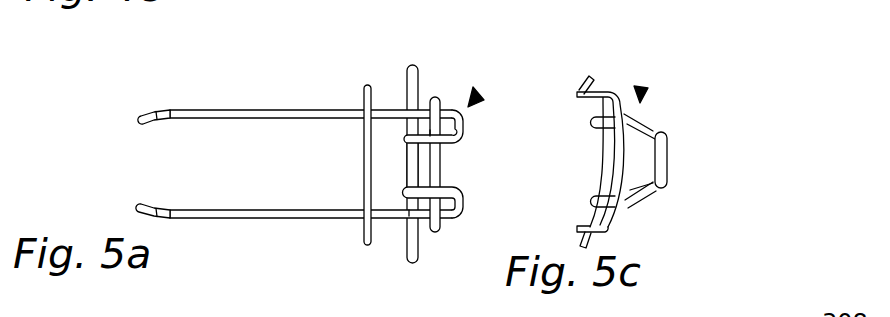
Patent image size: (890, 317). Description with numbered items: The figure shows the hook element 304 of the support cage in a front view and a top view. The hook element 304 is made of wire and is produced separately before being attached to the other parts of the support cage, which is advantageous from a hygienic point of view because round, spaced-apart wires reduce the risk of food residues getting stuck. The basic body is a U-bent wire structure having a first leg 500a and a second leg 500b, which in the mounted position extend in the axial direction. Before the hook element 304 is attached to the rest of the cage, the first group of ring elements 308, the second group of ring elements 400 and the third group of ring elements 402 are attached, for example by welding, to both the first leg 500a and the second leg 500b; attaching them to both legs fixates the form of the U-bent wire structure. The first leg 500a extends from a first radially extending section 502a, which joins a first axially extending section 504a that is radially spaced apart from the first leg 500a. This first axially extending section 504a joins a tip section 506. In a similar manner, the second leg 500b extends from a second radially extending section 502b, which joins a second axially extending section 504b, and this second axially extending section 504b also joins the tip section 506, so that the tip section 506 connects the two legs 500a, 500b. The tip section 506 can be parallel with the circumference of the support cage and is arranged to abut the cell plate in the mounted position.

In FIG. 5A, the hook element 304 is at (480, 94).
In FIG. 5C, the hook element 304 is at (642, 88).
In FIG. 5A, the first group of ring elements 308 is at (436, 100).
In FIG. 5C, the first group of ring elements 308 is at (657, 187).
In FIG. 5A, the second group of ring elements 400 is at (368, 216).
In FIG. 5C, the second group of ring elements 400 is at (628, 153).
In FIG. 5A, the third group of ring elements 402 is at (411, 68).
In FIG. 5C, the third group of ring elements 402 is at (585, 82).
In FIG. 5A, the first leg 500a is at (204, 113).
In FIG. 5A, the second leg 500b is at (223, 212).
In FIG. 5A, the first radially extending section 502a is at (464, 118).
In FIG. 5C, the first radially extending section 502a is at (641, 125).
In FIG. 5A, the second radially extending section 502b is at (464, 193).
In FIG. 5C, the second radially extending section 502b is at (648, 195).
In FIG. 5A, the first axially extending section 504a is at (432, 134).
In FIG. 5A, the second axially extending section 504b is at (410, 214).
In FIG. 5A, the tip section 506 is at (415, 164).
In FIG. 5C, the tip section 506 is at (660, 165).